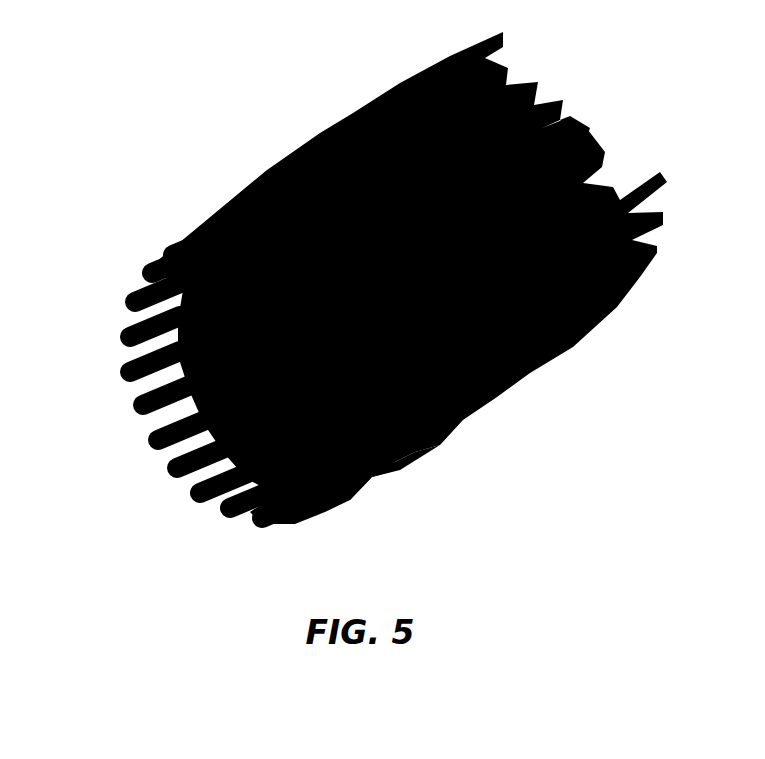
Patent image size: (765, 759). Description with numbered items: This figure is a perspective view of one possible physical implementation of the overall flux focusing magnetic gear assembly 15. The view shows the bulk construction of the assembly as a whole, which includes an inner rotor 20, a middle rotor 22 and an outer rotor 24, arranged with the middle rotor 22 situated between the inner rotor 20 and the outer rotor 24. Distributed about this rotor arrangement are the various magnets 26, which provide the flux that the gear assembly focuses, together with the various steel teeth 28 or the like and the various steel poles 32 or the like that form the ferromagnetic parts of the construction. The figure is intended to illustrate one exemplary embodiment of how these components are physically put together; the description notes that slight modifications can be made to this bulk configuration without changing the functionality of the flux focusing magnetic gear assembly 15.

The flux focusing magnetic gear assembly 15 is at (311, 66).
The inner rotor 20 is at (178, 371).
The middle rotor 22 is at (158, 441).
The outer rotor 24 is at (208, 463).
The magnets 26 is at (240, 478).
The steel teeth 28 is at (260, 480).
The steel poles 32 is at (373, 465).